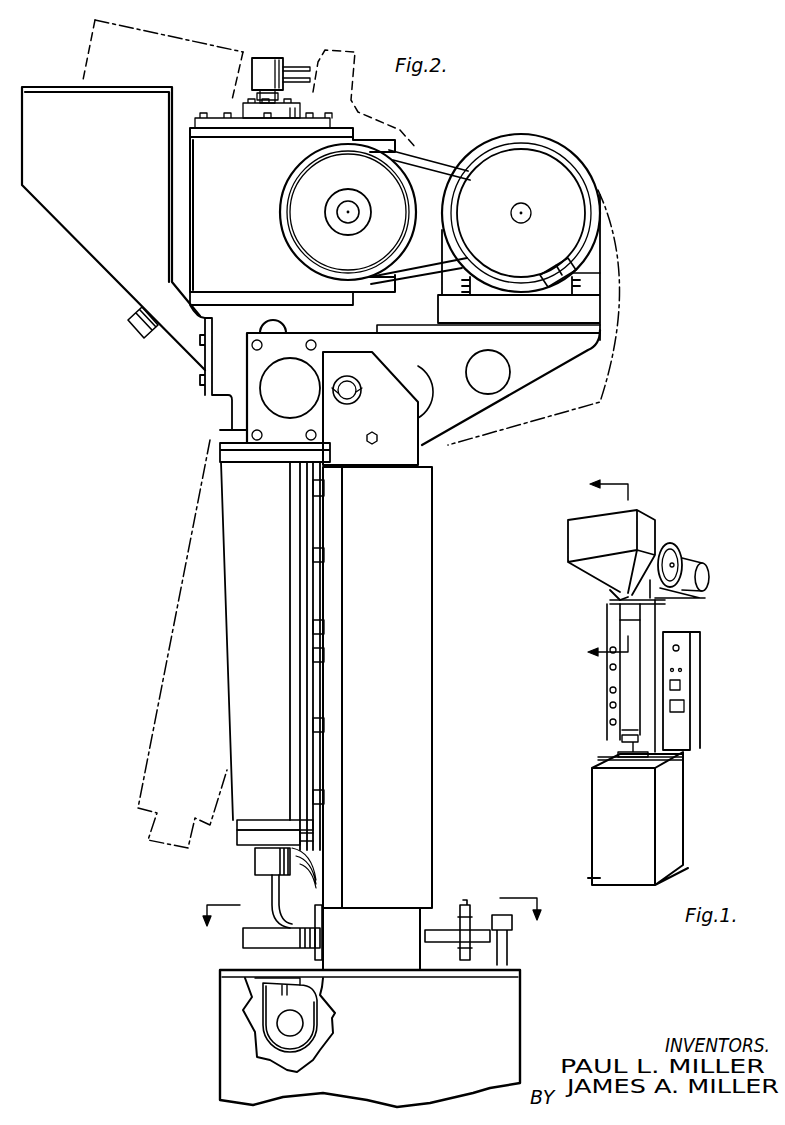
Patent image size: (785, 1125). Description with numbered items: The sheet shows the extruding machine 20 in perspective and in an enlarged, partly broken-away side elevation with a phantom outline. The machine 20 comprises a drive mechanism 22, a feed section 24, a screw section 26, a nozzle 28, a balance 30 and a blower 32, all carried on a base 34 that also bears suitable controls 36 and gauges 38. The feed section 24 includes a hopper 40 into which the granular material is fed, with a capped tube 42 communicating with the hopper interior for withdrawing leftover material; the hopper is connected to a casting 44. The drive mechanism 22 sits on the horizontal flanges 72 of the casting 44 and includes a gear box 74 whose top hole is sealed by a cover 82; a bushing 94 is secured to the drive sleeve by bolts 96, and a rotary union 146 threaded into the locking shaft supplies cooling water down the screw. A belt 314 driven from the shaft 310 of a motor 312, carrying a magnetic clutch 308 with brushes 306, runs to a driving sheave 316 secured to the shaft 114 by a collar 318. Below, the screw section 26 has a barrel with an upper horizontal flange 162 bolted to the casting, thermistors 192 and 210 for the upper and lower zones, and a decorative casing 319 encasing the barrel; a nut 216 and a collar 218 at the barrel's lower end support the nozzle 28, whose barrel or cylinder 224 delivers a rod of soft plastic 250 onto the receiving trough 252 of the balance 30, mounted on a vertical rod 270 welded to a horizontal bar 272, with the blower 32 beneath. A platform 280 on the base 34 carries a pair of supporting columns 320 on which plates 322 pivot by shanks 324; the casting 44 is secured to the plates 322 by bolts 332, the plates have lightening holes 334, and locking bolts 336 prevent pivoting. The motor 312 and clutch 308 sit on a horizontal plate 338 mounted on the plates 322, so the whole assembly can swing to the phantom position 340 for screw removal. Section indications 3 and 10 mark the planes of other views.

In FIG. 2, the extruding machine 20 is at (645, 148).
In FIG. 1, the extruding machine 20 is at (720, 648).
In FIG. 2, the drive mechanism 22 is at (447, 121).
In FIG. 1, the drive mechanism 22 is at (692, 560).
In FIG. 2, the feed section 24 is at (158, 403).
In FIG. 2, the screw section 26 is at (222, 716).
In FIG. 2, the nozzle 28 is at (238, 874).
In FIG. 2, the balance 30 is at (198, 952).
In FIG. 2, the blower 32 is at (322, 1034).
In FIG. 2, the base 34 is at (520, 1030).
In FIG. 1, the base 34 is at (686, 825).
In FIG. 2, the controls 36 is at (432, 840).
In FIG. 1, the controls 36 is at (704, 738).
In FIG. 1, the gauges 38 is at (609, 688).
In FIG. 2, the hopper 40 is at (113, 228).
In FIG. 1, the hopper 40 is at (572, 540).
In FIG. 2, the capped tube 42 is at (130, 333).
In FIG. 2, the casting 44 is at (225, 420).
In FIG. 2, the horizontal flanges 72 is at (210, 300).
In FIG. 2, the gear box 74 is at (292, 214).
In FIG. 2, the cover 82 is at (190, 135).
In FIG. 2, the bushing 94 is at (245, 113).
In FIG. 2, the bolts 96 is at (250, 97).
In FIG. 2, the shaft 114 is at (338, 218).
In FIG. 2, the rotary union 146 is at (268, 62).
In FIG. 2, the upper horizontal flange 162 is at (226, 455).
In FIG. 2, the thermistor 192 is at (326, 556).
In FIG. 2, the thermistor 210 is at (326, 724).
In FIG. 2, the nut 216 is at (314, 826).
In FIG. 2, the collar 218 is at (302, 838).
In FIG. 2, the barrel or cylinder 224 is at (256, 860).
In FIG. 2, the rod of soft plastic 250 is at (270, 900).
In FIG. 2, the receiving trough 252 is at (252, 942).
In FIG. 2, the vertical rod 270 is at (323, 916).
In FIG. 2, the horizontal bar 272 is at (500, 962).
In FIG. 1, the platform 280 is at (600, 760).
In FIG. 2, the brushes 306 is at (592, 190).
In FIG. 2, the magnetic clutch 308 is at (600, 273).
In FIG. 2, the shaft 310 is at (528, 208).
In FIG. 2, the motor 312 is at (545, 136).
In FIG. 2, the belt 314 is at (434, 164).
In FIG. 2, the driving sheave 316 is at (302, 254).
In FIG. 2, the collar 318 is at (360, 222).
In FIG. 2, the decorative casing 319 is at (226, 650).
In FIG. 1, the decorative casing 319 is at (606, 712).
In FIG. 2, the supporting columns 320 is at (428, 932).
In FIG. 1, the supporting columns 320 is at (612, 740).
In FIG. 2, the plates 322 is at (560, 366).
In FIG. 2, the shanks 324 is at (355, 400).
In FIG. 2, the bolts 332 is at (258, 442).
In FIG. 2, the lightening holes 334 is at (470, 368).
In FIG. 2, the locking bolts 336 is at (378, 442).
In FIG. 2, the horizontal plate 338 is at (398, 326).
In FIG. 2, the phantom position 340 is at (176, 570).
In FIG. 1, the section line 3 is at (595, 573).
In FIG. 2, the section line 10 is at (366, 923).